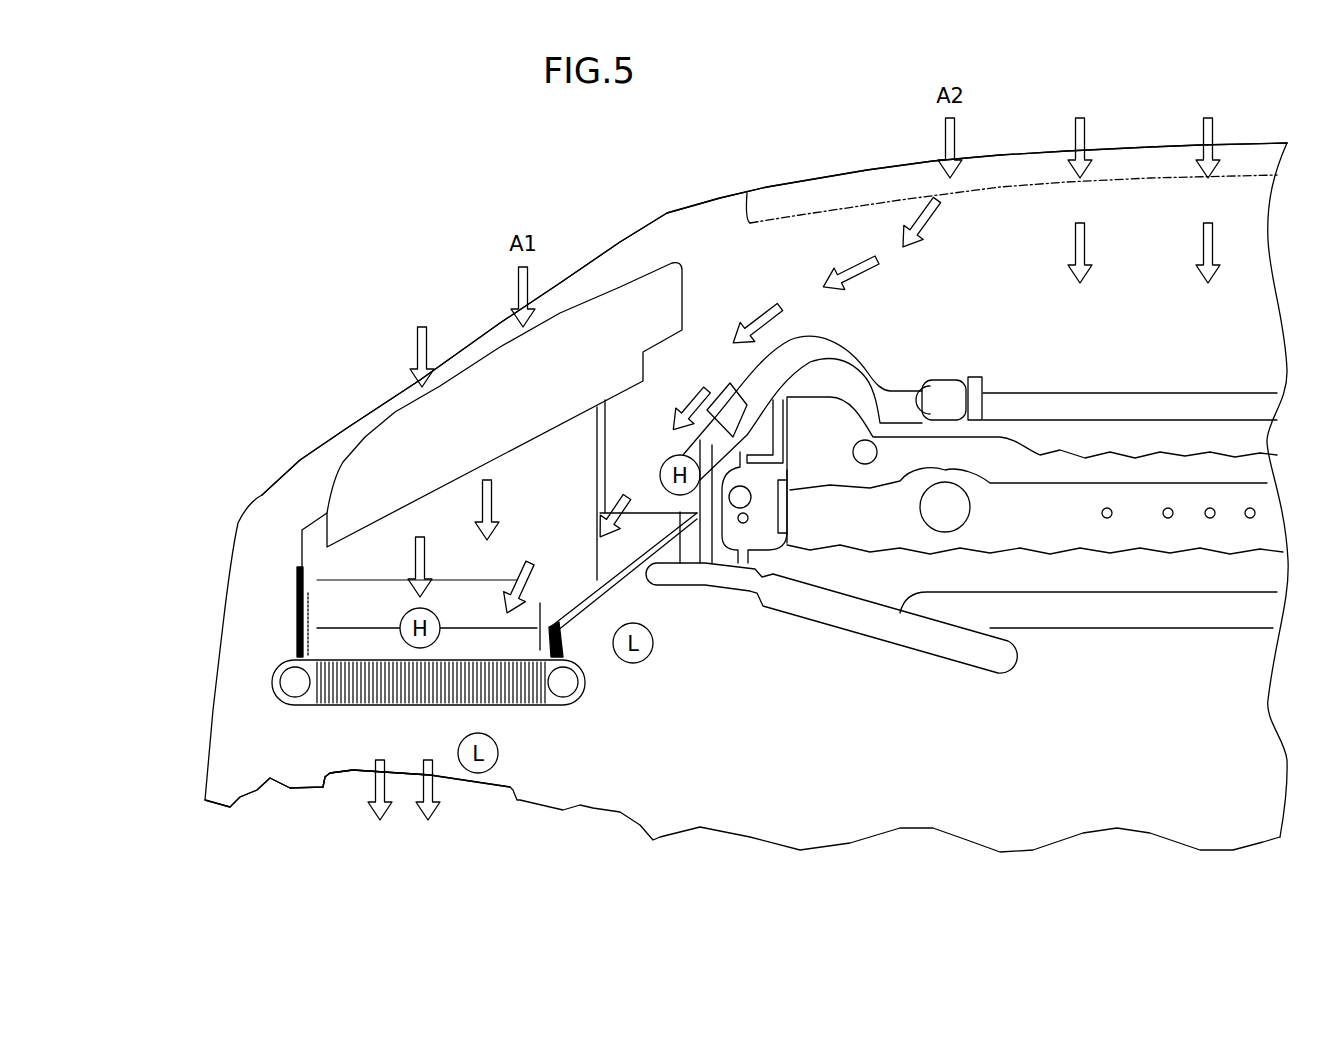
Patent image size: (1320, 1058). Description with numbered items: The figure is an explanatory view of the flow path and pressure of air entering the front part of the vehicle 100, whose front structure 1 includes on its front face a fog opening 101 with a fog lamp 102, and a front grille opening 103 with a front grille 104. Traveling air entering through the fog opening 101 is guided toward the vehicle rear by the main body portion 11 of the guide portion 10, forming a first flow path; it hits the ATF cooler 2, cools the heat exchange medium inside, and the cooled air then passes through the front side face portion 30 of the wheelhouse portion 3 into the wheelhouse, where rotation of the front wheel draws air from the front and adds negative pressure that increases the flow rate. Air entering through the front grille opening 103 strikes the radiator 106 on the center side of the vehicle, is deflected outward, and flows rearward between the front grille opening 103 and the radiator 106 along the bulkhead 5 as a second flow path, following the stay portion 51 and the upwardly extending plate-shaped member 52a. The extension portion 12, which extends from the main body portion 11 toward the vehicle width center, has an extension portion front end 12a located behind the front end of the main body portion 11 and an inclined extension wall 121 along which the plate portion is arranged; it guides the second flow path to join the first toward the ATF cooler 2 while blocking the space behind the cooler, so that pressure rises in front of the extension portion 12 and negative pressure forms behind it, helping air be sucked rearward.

The front structure 1 is at (1232, 122).
The guide portion 10 is at (279, 528).
The main body portion 11 is at (323, 565).
The extension portion 12 is at (647, 577).
The extension portion front end 12a is at (637, 513).
The extension wall 121 is at (580, 612).
The ATF cooler 2 is at (510, 703).
The wheelhouse portion 3 is at (335, 791).
The front side face portion 30 is at (353, 773).
The bulkhead 5 is at (759, 441).
The stay portion 51 is at (840, 360).
The plate-shaped member 52a is at (710, 556).
The vehicle 100 is at (805, 166).
The fog opening 101 is at (473, 337).
The fog lamp 102 is at (417, 402).
The front grille opening 103 is at (910, 160).
The front grille 104 is at (1032, 160).
The radiator 106 is at (1212, 450).